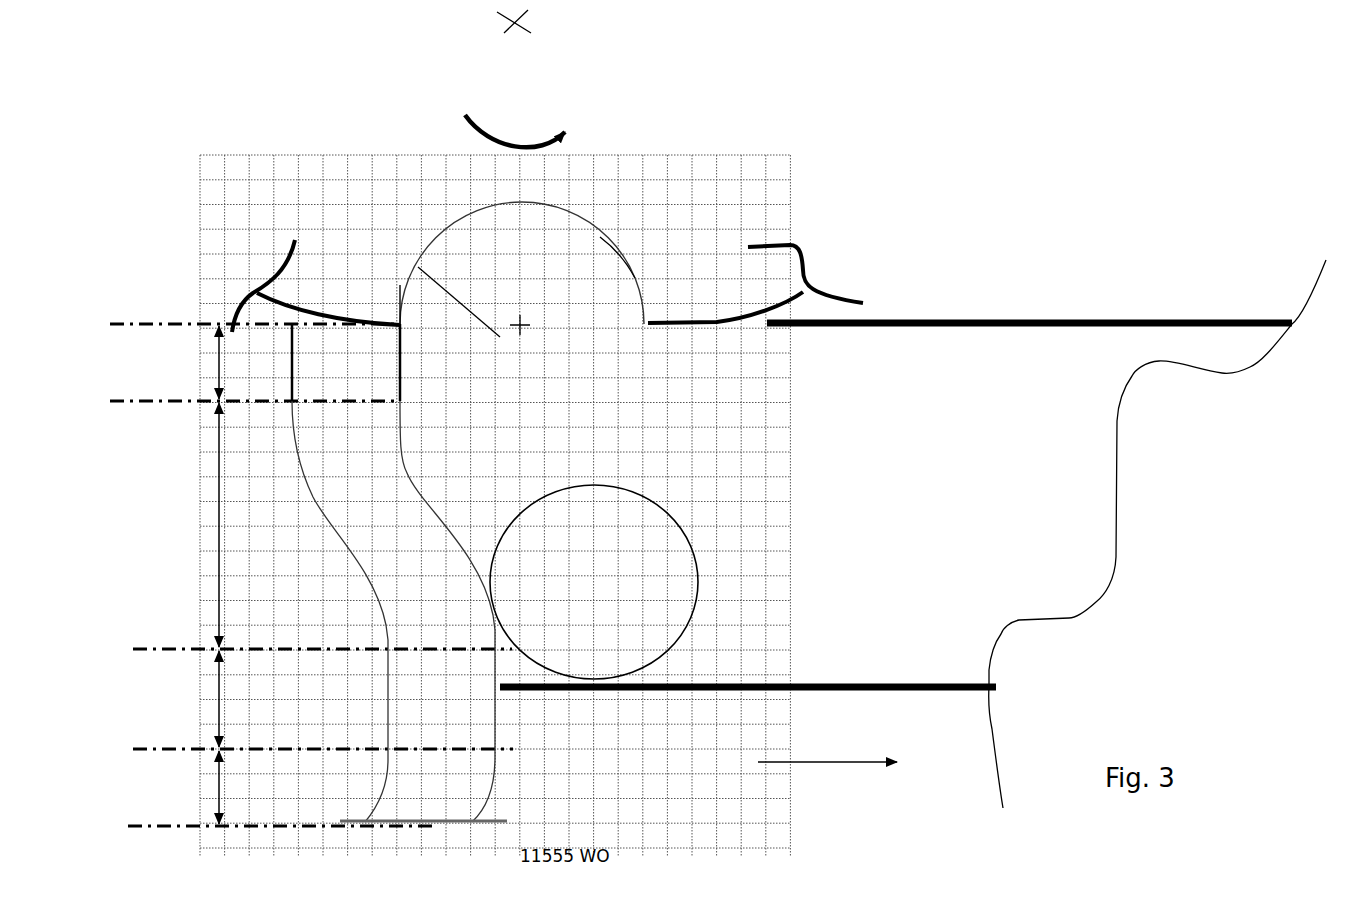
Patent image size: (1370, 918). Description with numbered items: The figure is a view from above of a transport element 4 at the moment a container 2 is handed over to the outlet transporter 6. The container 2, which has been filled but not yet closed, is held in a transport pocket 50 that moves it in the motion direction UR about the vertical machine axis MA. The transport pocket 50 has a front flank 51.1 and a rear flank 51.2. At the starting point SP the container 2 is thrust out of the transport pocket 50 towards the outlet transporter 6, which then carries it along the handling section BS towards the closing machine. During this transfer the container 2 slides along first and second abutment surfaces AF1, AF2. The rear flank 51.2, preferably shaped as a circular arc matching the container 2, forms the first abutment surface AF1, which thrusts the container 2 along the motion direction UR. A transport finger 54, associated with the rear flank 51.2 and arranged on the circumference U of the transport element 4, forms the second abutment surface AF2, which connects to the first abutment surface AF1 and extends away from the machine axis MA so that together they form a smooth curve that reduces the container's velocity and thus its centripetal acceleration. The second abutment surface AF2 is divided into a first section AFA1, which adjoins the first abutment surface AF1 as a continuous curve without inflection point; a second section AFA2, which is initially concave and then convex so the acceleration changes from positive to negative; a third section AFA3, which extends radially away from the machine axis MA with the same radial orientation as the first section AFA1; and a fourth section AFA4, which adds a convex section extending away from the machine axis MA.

The container 2 is at (598, 595).
The transport element 4 is at (710, 275).
The outlet transporter 6 is at (927, 556).
The transport pocket 50 is at (448, 272).
The front flank 51.1 is at (615, 268).
The rear flank 51.2 is at (410, 297).
The transport finger 54 is at (425, 576).
The machine axis MA is at (515, 39).
The motion direction UR is at (515, 123).
The first section AFA1 is at (173, 362).
The second section AFA2 is at (173, 525).
The third section AFA3 is at (173, 699).
The fourth section AFA4 is at (173, 787).
The first abutment surface AF1 is at (500, 337).
The second abutment surface AF2 is at (433, 497).
The starting point SP is at (622, 363).
The circumference U is at (750, 333).
The handling section BS is at (827, 746).